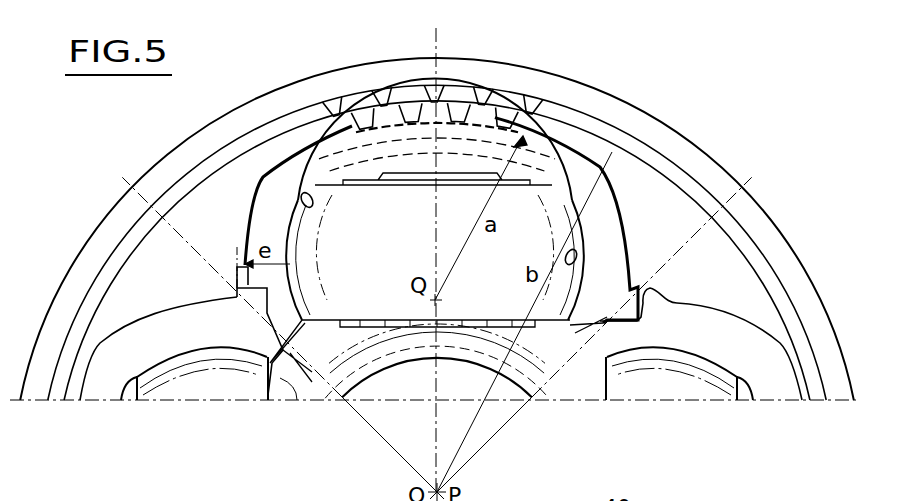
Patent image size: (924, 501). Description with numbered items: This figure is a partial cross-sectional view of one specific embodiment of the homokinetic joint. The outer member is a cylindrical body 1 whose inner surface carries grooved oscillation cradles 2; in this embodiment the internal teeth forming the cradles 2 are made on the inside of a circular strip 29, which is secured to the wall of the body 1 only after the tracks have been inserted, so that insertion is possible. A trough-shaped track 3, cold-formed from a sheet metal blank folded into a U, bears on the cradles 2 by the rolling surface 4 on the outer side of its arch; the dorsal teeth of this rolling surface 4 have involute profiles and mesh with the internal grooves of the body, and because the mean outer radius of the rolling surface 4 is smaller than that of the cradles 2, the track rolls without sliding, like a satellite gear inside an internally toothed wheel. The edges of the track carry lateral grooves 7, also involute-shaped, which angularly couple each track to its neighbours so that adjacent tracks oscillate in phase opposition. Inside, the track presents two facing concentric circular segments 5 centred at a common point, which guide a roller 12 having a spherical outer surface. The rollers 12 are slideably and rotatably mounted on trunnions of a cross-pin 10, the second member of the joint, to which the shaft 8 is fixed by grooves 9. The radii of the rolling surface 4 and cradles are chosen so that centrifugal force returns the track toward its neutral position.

The cylindrical body 1 is at (658, 119).
The oscillation cradles 2 is at (507, 97).
The trough-shaped tracks 3 is at (612, 255).
The rolling surface 4 is at (408, 102).
The concentric circular segments 5 is at (303, 198).
The lateral grooves 7 is at (645, 303).
The shaft 8 is at (410, 385).
The grooves 9 is at (365, 365).
The cross-pin 10 is at (287, 398).
The rollers 12 is at (292, 237).
The circular strip 29 is at (667, 173).